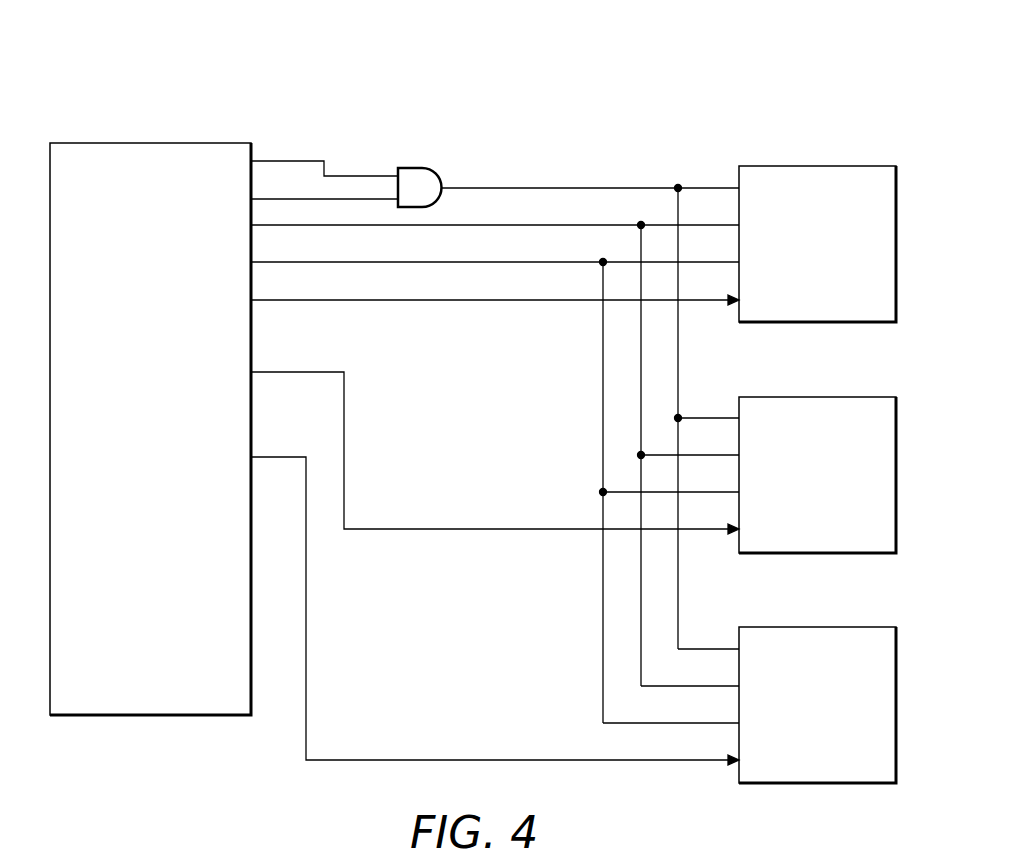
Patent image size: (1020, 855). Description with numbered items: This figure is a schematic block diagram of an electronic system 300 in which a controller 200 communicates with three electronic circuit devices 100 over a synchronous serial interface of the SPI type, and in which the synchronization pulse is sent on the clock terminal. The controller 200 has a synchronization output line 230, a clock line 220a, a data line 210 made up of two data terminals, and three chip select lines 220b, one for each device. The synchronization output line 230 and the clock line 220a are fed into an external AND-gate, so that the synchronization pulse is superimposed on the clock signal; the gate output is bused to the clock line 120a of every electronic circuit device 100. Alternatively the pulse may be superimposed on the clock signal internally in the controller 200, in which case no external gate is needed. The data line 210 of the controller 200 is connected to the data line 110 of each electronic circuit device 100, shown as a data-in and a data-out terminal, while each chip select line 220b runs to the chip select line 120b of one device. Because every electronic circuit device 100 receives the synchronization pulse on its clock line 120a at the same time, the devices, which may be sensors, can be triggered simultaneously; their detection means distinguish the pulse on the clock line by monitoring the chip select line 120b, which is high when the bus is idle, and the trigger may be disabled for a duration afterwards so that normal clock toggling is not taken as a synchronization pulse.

The electronic system 300 is at (660, 67).
The controller 200 is at (220, 143).
The synchronization output line 230 is at (200, 159).
The clock line 220a is at (207, 197).
The data line 210 is at (195, 212).
The chip select line 220b is at (208, 298).
The electronic circuit device 100 is at (863, 166).
The clock line 120a is at (780, 188).
The data line 110 is at (783, 213).
The chip select line 120b is at (770, 299).